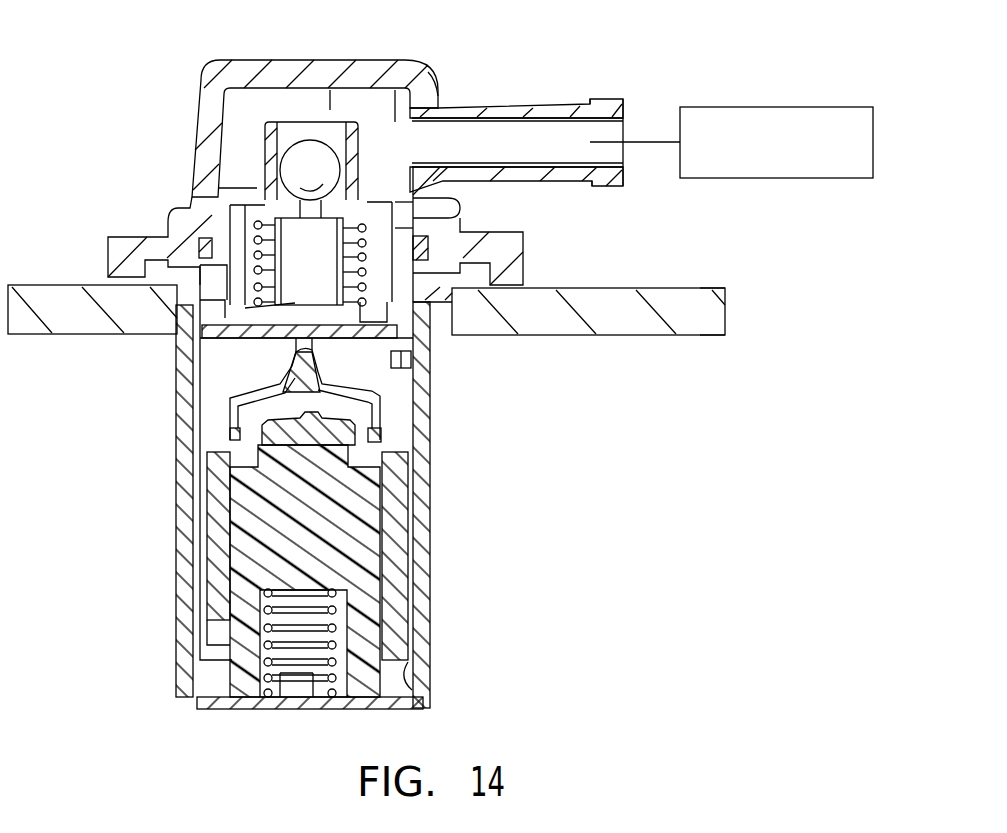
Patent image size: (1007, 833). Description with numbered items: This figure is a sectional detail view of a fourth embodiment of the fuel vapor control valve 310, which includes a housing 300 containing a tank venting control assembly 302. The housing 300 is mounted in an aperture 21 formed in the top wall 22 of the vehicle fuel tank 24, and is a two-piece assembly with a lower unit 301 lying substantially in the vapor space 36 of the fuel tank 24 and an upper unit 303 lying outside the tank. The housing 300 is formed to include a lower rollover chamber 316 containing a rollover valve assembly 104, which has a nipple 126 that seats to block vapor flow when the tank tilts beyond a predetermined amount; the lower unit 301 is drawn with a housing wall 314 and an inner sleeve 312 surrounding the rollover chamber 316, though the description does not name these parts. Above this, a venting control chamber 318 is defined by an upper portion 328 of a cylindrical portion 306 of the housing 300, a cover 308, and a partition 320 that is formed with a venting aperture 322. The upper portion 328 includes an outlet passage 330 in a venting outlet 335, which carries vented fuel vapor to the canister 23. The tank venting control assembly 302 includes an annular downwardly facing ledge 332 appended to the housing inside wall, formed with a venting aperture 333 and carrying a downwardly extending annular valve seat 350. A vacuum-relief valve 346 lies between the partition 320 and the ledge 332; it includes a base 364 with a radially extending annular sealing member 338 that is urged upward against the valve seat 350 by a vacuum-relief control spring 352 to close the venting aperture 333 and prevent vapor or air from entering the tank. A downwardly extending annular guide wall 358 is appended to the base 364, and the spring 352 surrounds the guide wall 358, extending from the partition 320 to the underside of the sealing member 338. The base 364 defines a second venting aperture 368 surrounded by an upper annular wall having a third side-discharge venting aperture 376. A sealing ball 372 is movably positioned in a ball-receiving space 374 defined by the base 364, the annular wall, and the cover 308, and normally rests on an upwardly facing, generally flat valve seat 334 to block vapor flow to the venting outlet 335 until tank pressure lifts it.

The upper unit 303 is at (197, 61).
The venting control chamber 318 is at (245, 132).
The cover 308 is at (418, 73).
The third side-discharge venting aperture 376 is at (393, 88).
The ball-receiving space 374 is at (318, 108).
The fuel vapor control valve 310 is at (592, 96).
The outlet passage 330 is at (456, 117).
The venting outlet 335 is at (628, 190).
The fuel canister 23 is at (811, 104).
The tank venting control assembly 302 is at (415, 280).
The vacuum-relief valve 346 is at (413, 214).
The annular downwardly facing ledge 332 is at (402, 216).
The base 364 is at (398, 232).
The vacuum-relief control spring 352 is at (418, 285).
The annular sealing member 338 is at (170, 216).
The upper portion 328 is at (207, 278).
The top wall 22 is at (633, 298).
The fuel tank 24 is at (718, 285).
The vapor space 36 is at (706, 376).
The housing 300 is at (434, 493).
The lower unit 301 is at (173, 576).
The housing wall 314 is at (196, 433).
The aperture 21 is at (182, 334).
The sleeve 312 is at (180, 357).
The cylindrical portion 306 is at (432, 452).
The lower rollover chamber 316 is at (388, 384).
The rollover valve assembly 104 is at (432, 394).
The partition 320 is at (432, 343).
The venting aperture 322 is at (290, 343).
The nipple 126 is at (425, 338).
The sealing ball 372 is at (312, 153).
The venting aperture 333 is at (333, 158).
The valve seat 334 is at (305, 141).
The second venting aperture 368 is at (278, 274).
The annular guide wall 358 is at (270, 288).
The annular valve seat 350 is at (258, 198).